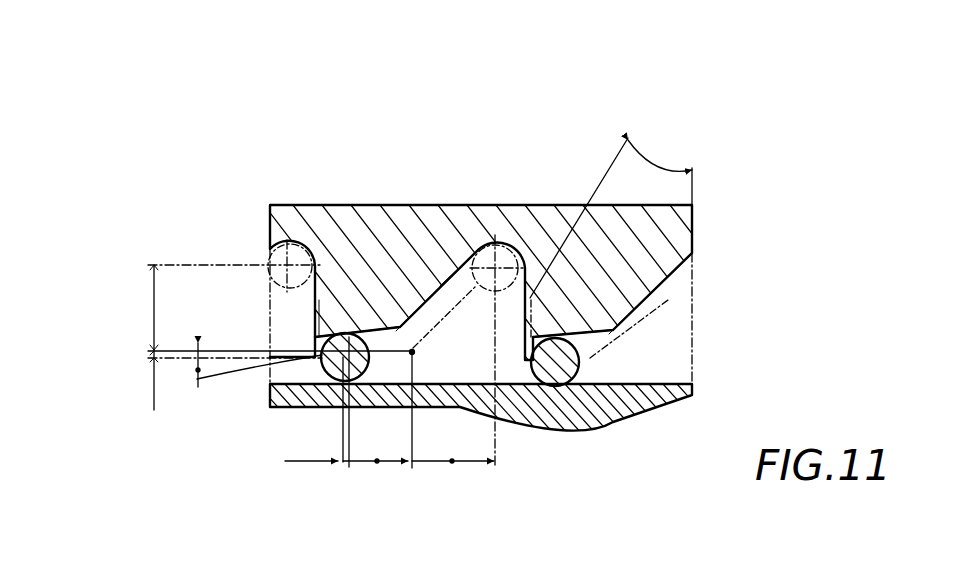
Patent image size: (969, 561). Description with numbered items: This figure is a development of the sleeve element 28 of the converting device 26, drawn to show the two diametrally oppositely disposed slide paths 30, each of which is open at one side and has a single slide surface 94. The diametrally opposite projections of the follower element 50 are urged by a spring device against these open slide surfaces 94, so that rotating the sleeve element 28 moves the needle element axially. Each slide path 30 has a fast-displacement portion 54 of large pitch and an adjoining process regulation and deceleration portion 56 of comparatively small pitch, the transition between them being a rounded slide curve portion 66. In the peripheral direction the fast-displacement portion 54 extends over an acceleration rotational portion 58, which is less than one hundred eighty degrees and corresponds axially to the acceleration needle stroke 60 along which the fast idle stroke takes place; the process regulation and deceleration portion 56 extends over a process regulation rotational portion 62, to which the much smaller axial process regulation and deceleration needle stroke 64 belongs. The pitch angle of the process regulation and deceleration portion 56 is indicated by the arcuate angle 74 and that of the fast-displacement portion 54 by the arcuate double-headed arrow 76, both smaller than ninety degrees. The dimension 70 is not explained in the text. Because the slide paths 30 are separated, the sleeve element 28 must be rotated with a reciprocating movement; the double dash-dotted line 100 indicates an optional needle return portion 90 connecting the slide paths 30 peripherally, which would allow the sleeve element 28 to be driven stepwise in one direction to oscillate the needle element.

The converting device 26 is at (484, 96).
The sleeve element 28 is at (443, 229).
The slide path 30 is at (445, 299).
The follower element 50 is at (272, 408).
The fast-displacement portion 54 is at (428, 307).
The process regulation and deceleration portion 56 is at (385, 341).
The acceleration rotational portion 58 is at (452, 462).
The acceleration needle stroke 60 is at (156, 305).
The process regulation rotational portion 62 is at (377, 462).
The process regulation and deceleration needle stroke 64 is at (150, 353).
The rounded slide curve portion 66 is at (402, 328).
The offset dimension 70 is at (345, 463).
The arcuate angle 74 is at (197, 371).
The arcuate double-headed arrow 76 is at (656, 160).
The needle return portion 90 is at (694, 237).
The slide surface 94 is at (449, 282).
The double dash-dotted line 100 is at (533, 298).